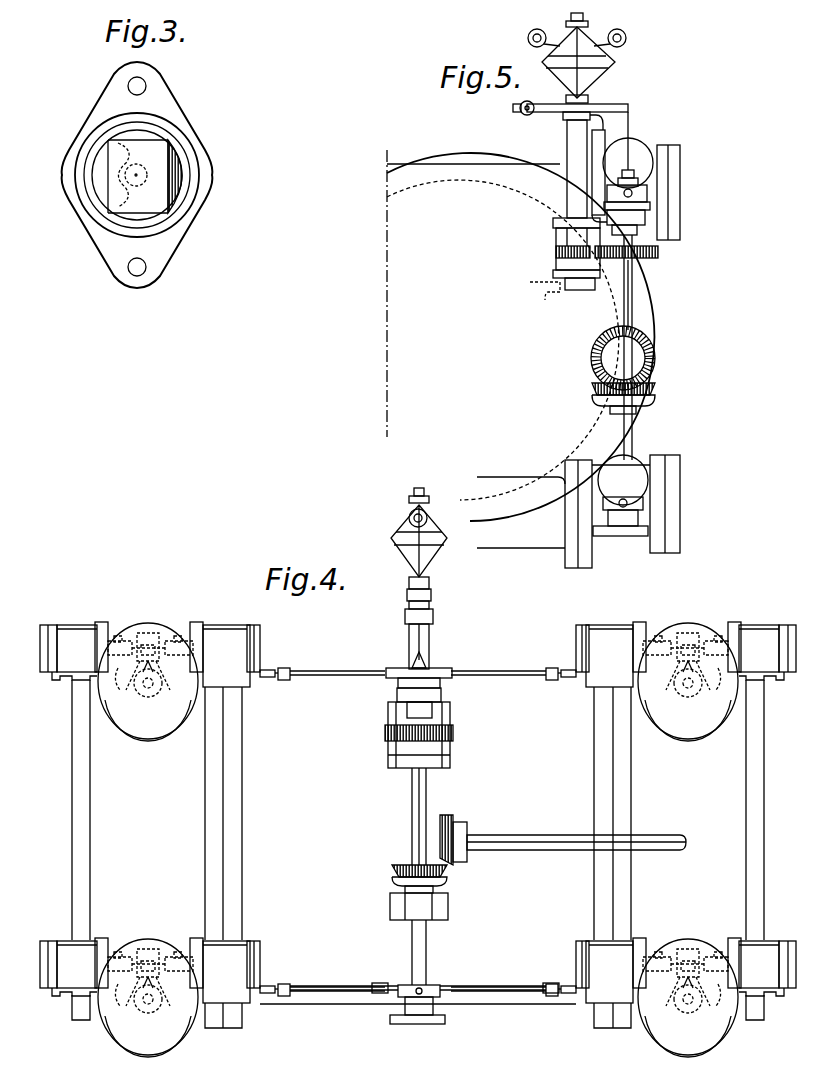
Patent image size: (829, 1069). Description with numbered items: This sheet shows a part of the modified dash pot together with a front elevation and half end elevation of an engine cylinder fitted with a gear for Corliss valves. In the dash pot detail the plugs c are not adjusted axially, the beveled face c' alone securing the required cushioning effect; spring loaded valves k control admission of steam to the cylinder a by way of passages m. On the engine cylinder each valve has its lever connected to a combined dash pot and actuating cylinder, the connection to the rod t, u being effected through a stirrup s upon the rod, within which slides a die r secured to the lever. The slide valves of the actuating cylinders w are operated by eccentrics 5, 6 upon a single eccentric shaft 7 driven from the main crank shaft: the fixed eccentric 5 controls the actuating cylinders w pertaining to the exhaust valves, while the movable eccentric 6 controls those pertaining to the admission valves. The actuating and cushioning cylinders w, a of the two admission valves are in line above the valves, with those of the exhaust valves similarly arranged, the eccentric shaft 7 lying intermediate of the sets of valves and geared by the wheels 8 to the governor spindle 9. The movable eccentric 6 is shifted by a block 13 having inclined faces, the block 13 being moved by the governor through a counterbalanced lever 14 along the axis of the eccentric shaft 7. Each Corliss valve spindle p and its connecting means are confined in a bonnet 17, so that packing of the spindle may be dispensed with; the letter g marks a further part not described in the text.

In FIG. 3, the plug c is at (143, 158).
In FIG. 3, the beveled face c' is at (145, 176).
In FIG. 3, the spring loaded valve k is at (138, 184).
In FIG. 3, the passage m is at (105, 178).
In FIG. 5, the counterbalanced lever 14 is at (608, 112).
In FIG. 5, the governor spindle 9 is at (572, 125).
In FIG. 5, the block 13 is at (632, 172).
In FIG. 5, the movable eccentric 6 is at (640, 192).
In FIG. 4, the movable eccentric 6 is at (438, 675).
In FIG. 5, the gear wheel 8 is at (560, 245).
In FIG. 4, the gear wheel 8 is at (452, 734).
In FIG. 5, the eccentric shaft 7 is at (634, 300).
In FIG. 4, the eccentric shaft 7 is at (423, 808).
In FIG. 5, the fixed eccentric 5 is at (645, 503).
In FIG. 4, the fixed eccentric 5 is at (430, 985).
In FIG. 4, the cushioning cylinder a is at (418, 809).
In FIG. 4, the actuating cylinder w is at (418, 812).
In FIG. 4, the bonnet 17 is at (710, 1026).
In FIG. 4, the rod t is at (712, 960).
In FIG. 4, the stirrup s is at (692, 955).
In FIG. 4, the rod u is at (664, 960).
In FIG. 4, the die r is at (688, 960).
In FIG. 4, the brake arm g is at (700, 990).
In FIG. 4, the Corliss valve spindle p is at (688, 985).